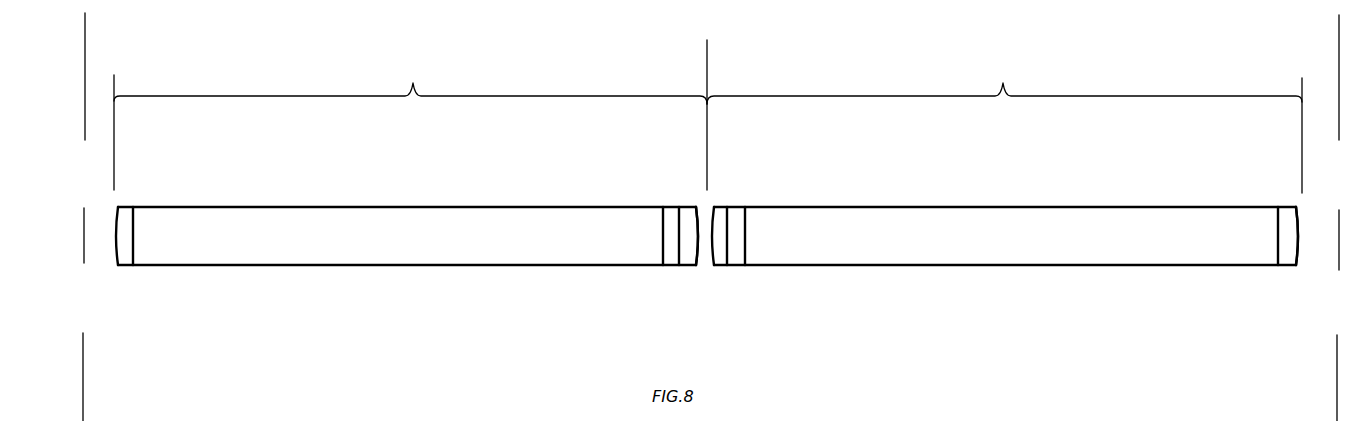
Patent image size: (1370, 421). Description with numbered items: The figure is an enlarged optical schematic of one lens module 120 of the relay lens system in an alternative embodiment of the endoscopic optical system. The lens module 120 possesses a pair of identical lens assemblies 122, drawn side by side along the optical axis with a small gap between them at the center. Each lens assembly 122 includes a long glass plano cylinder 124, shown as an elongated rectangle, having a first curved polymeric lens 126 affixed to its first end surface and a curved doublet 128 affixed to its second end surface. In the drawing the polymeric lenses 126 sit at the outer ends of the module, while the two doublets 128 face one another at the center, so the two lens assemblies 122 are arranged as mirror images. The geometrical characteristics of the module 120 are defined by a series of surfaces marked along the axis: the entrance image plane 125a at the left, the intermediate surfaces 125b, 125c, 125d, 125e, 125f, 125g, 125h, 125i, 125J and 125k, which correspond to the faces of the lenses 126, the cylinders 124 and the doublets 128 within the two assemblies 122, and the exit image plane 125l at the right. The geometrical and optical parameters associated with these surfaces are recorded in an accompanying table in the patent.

The lens module 120 is at (748, 62).
The lens assembly 122 is at (708, 116).
The glass plano cylinder 124 is at (420, 250).
The entrance image plane 125a is at (85, 78).
The intermediate surface 125b is at (112, 230).
The intermediate surface 125c is at (136, 219).
The intermediate surface 125d is at (663, 225).
The intermediate surface 125e is at (680, 243).
The intermediate surface 125f is at (700, 207).
The intermediate surface 125g is at (707, 265).
The intermediate surface 125h is at (729, 222).
The intermediate surface 125i is at (745, 240).
The intermediate surface 125J is at (1276, 222).
The intermediate surface 125k is at (1300, 222).
The exit image plane 125l is at (1339, 70).
The first curved polymeric lens 126 is at (121, 262).
The curved doublet 128 is at (678, 282).